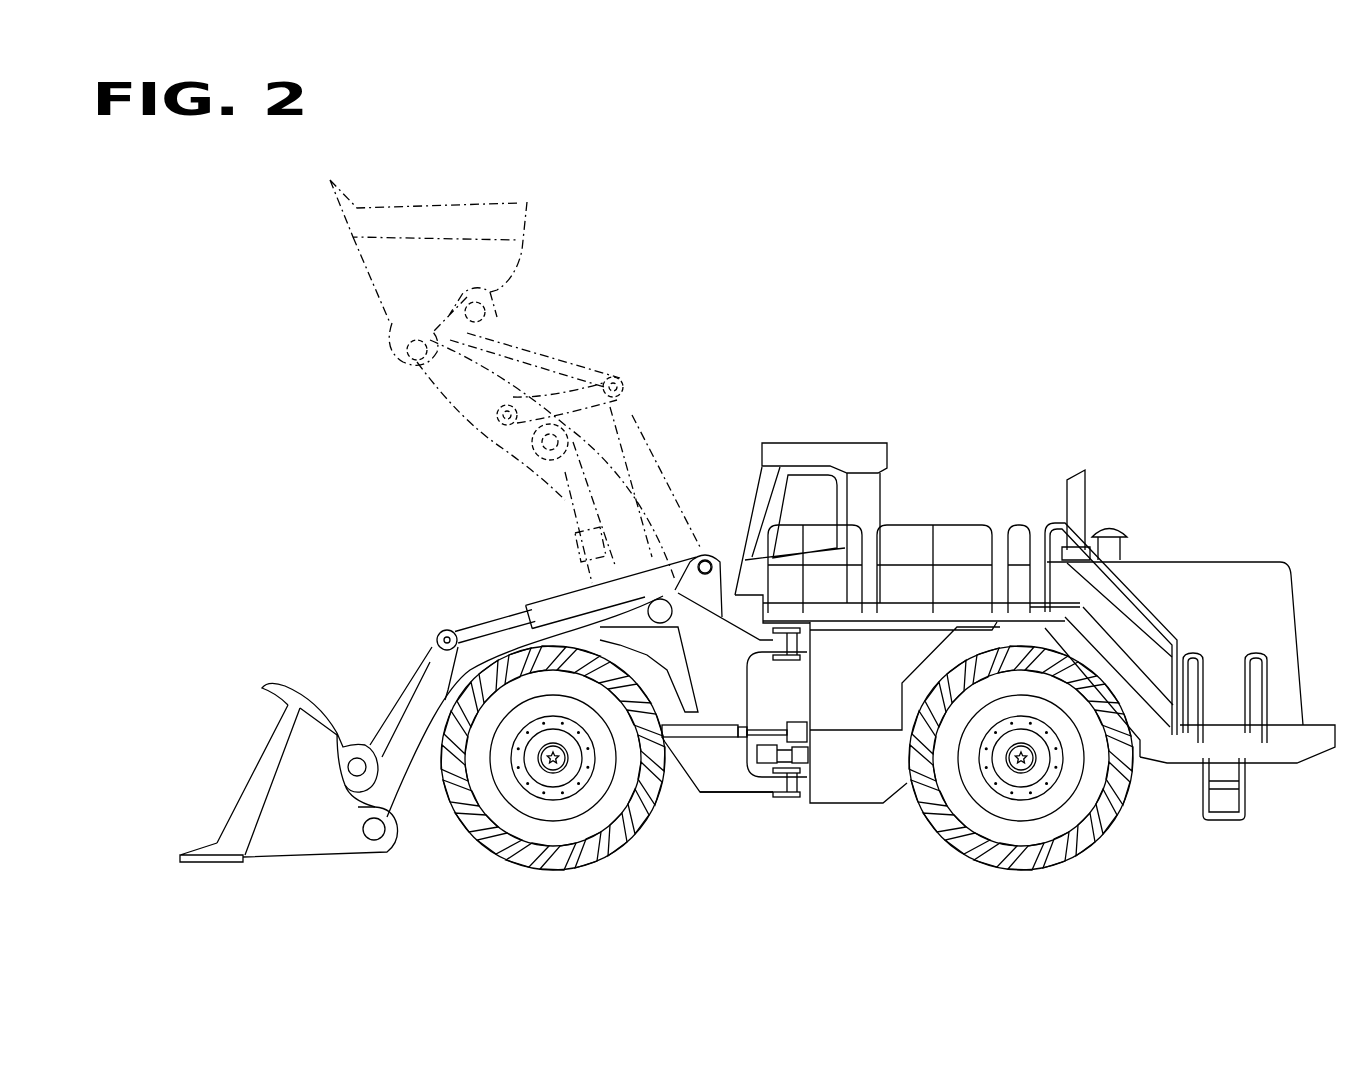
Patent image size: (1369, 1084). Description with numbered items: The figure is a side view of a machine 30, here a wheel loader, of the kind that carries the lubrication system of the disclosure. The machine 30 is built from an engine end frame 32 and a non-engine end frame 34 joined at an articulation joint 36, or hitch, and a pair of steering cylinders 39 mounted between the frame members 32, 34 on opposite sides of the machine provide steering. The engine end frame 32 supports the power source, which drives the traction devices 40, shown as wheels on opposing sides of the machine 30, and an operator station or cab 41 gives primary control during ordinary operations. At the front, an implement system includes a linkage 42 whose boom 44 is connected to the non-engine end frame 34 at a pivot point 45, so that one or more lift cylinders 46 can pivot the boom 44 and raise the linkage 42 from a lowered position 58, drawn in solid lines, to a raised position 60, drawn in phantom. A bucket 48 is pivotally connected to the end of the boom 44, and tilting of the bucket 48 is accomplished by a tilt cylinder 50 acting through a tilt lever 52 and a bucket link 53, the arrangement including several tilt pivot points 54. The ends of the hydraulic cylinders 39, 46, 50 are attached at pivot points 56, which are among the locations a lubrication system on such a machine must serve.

The machine 30 is at (940, 277).
The engine end frame 32 is at (867, 803).
The non-engine end frame 34 is at (727, 787).
The articulation joint 36 is at (788, 644).
The steering cylinders 39 is at (703, 733).
The traction devices 40 is at (592, 862).
The operator station or cab 41 is at (880, 455).
The linkage 42 is at (588, 340).
The boom 44 is at (418, 815).
The pivot point 45 is at (680, 590).
The lift cylinders 46 is at (580, 558).
The bucket 48 is at (285, 838).
The tilt cylinder 50 is at (497, 612).
The tilt lever 52 is at (437, 677).
The bucket link 53 is at (397, 690).
The tilt pivot points 54 is at (507, 302).
The pivot points 56 is at (627, 392).
The lowered position 58 is at (214, 774).
The raised position 60 is at (299, 268).